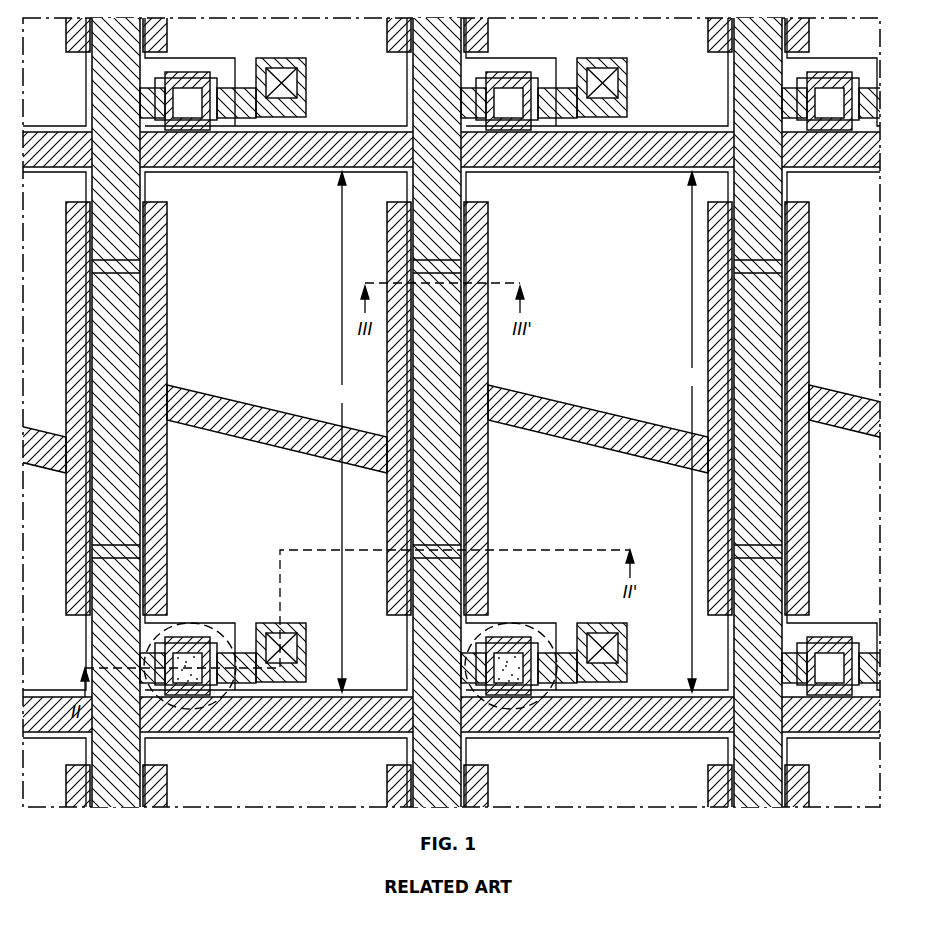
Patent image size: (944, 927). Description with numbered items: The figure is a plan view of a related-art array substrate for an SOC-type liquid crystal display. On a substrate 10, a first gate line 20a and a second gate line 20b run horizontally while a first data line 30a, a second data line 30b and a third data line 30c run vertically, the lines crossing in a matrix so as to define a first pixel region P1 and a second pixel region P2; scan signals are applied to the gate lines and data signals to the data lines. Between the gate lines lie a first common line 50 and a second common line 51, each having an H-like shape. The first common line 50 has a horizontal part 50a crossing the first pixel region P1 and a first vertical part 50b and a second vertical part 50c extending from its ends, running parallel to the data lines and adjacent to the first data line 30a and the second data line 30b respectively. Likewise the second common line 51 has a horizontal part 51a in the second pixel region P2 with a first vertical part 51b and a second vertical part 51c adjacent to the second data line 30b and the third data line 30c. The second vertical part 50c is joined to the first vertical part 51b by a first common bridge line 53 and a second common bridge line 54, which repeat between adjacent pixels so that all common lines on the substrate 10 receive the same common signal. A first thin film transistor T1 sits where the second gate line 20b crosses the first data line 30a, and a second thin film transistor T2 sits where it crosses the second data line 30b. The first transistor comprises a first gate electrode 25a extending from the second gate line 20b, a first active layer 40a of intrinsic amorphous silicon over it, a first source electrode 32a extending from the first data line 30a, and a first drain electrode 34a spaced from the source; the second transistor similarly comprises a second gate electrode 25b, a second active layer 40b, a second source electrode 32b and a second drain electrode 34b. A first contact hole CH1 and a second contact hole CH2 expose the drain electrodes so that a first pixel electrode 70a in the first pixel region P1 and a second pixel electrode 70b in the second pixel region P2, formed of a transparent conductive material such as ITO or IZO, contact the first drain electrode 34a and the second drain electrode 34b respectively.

The substrate 10 is at (353, 788).
The first gate line 20a is at (365, 134).
The second gate line 20b is at (287, 722).
The first data line 30a is at (115, 347).
The second data line 30b is at (440, 455).
The third data line 30c is at (788, 452).
The first pixel electrode 70a is at (319, 184).
The second pixel electrode 70b is at (641, 184).
The first common line 50 is at (277, 408).
The horizontal part 50a is at (232, 410).
The first vertical part 50b is at (167, 330).
The second vertical part 50c is at (393, 366).
The second common line 51 is at (598, 408).
The horizontal part 51a is at (552, 410).
The first vertical part 51b is at (488, 330).
The second vertical part 51c is at (713, 366).
The first common bridge line 53 is at (128, 263).
The second common bridge line 54 is at (128, 543).
The first gate electrode 25a is at (190, 637).
The second gate electrode 25b is at (512, 637).
The first source electrode 32a is at (163, 652).
The second source electrode 32b is at (486, 652).
The first drain electrode 34a is at (215, 650).
The second drain electrode 34b is at (538, 650).
The first active layer 40a is at (235, 666).
The second active layer 40b is at (570, 667).
The first thin film transistor T1 is at (247, 622).
The second thin film transistor T2 is at (570, 622).
The first contact hole CH1 is at (288, 627).
The second contact hole CH2 is at (609, 627).
The first pixel region P1 is at (342, 432).
The second pixel region P2 is at (692, 432).